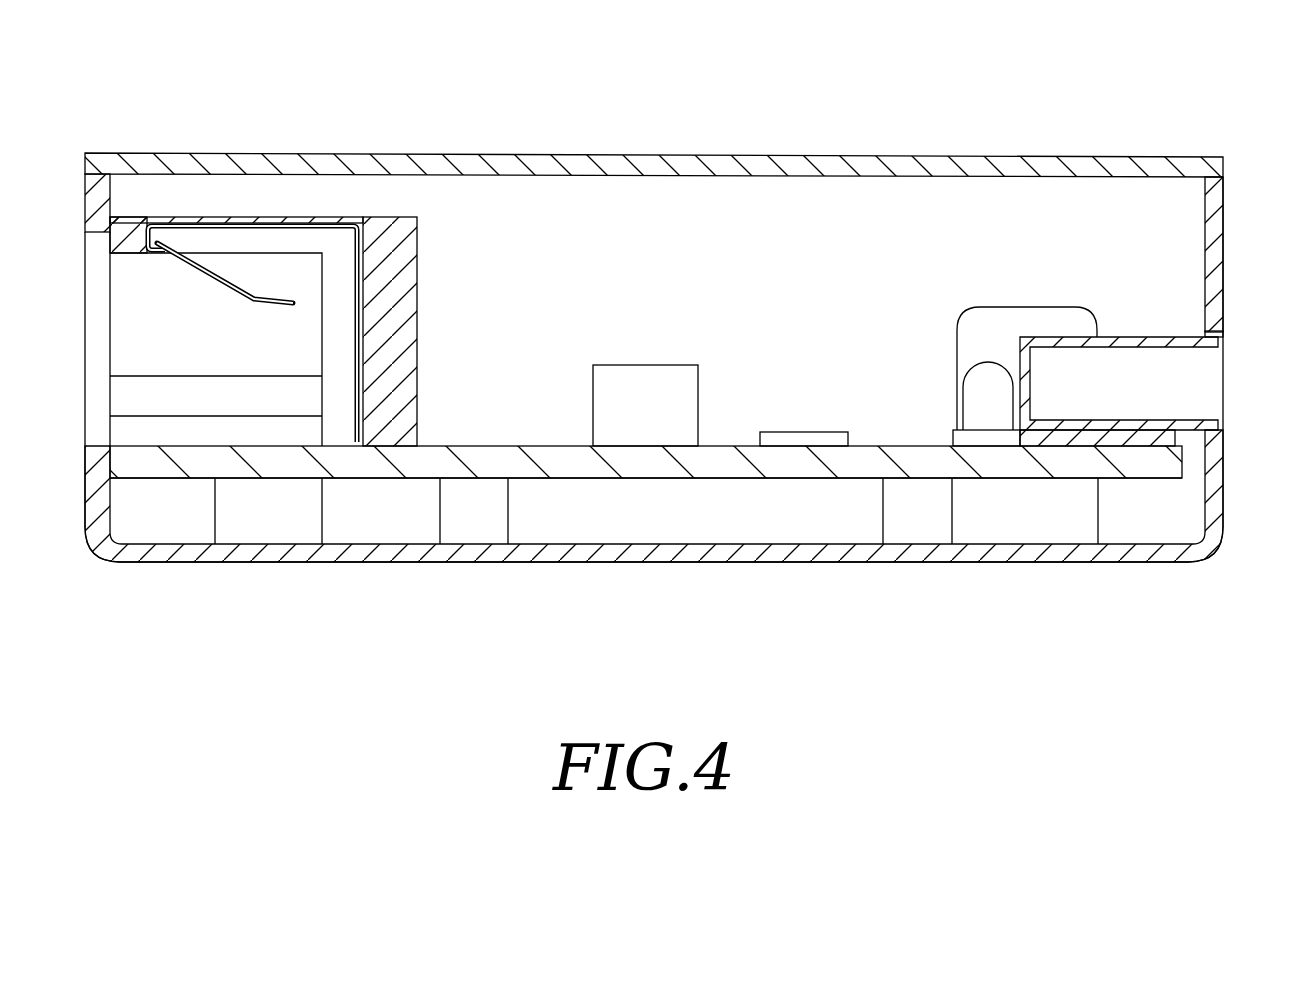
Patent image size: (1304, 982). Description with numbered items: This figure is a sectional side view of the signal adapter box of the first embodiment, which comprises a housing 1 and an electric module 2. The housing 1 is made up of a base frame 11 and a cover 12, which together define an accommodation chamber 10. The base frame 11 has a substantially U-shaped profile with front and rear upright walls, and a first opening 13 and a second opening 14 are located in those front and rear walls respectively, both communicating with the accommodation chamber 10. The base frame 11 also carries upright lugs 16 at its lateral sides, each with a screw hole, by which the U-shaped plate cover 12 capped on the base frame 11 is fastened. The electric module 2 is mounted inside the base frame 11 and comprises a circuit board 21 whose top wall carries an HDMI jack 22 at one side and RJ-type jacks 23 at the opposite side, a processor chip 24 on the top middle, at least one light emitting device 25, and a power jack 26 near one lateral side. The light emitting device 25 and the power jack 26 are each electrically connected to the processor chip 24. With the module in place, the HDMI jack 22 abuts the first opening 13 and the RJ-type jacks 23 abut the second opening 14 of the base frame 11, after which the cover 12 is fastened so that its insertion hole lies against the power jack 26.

The housing 1 is at (1235, 143).
The electric module 2 is at (997, 638).
The accommodation chamber 10 is at (483, 510).
The base frame 11 is at (327, 552).
The cover 12 is at (1078, 167).
The first opening 13 is at (1217, 327).
The second opening 14 is at (97, 233).
The upright lug 16 is at (1073, 525).
The circuit board 21 is at (692, 467).
The HDMI jack 22 is at (1185, 347).
The RJ-type jack 23 is at (122, 393).
The processor chip 24 is at (806, 438).
The light emitting device 25 is at (990, 413).
The power jack 26 is at (643, 423).